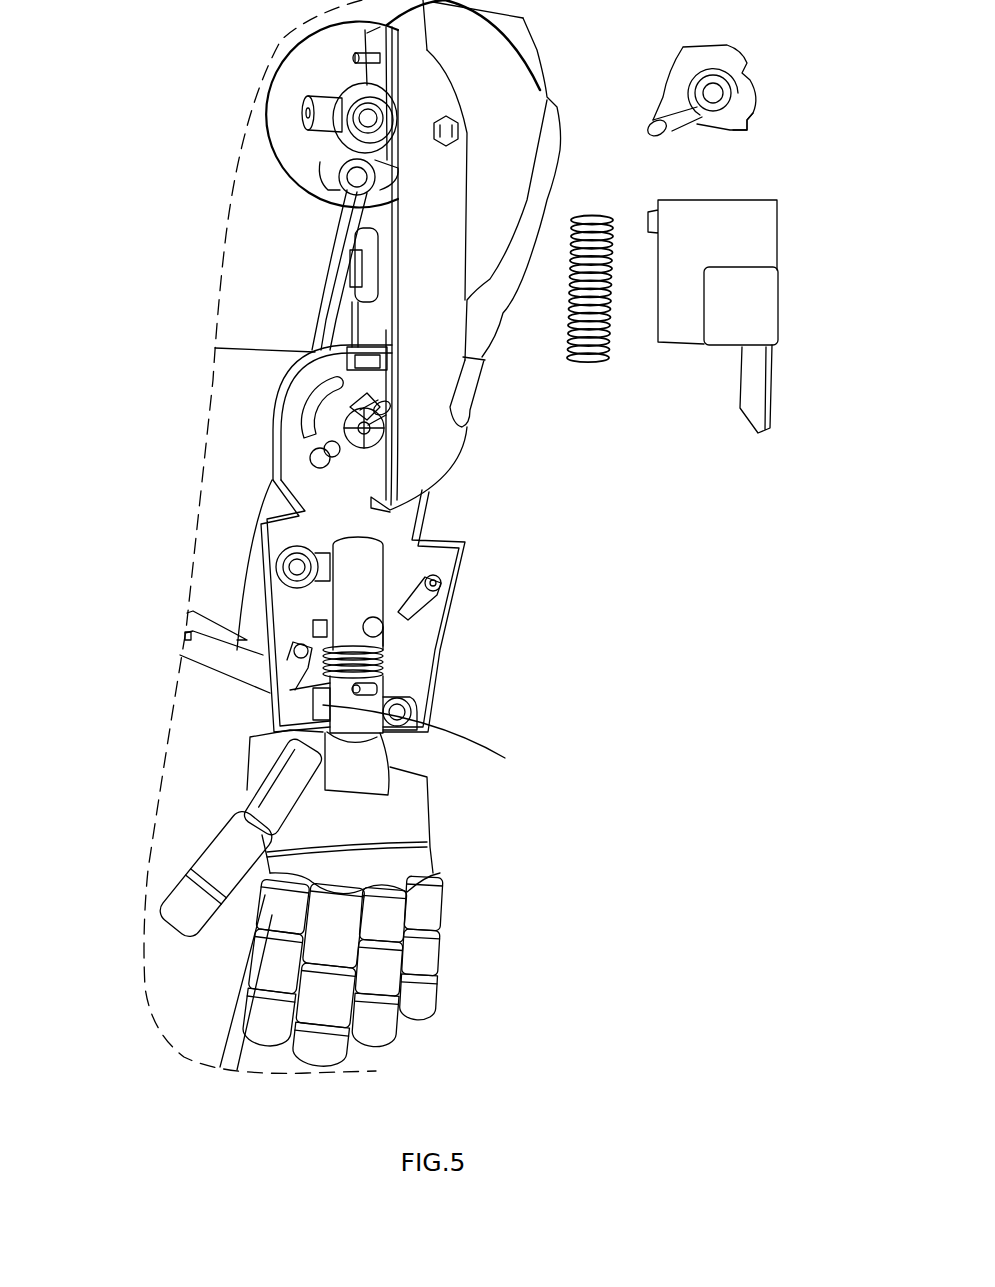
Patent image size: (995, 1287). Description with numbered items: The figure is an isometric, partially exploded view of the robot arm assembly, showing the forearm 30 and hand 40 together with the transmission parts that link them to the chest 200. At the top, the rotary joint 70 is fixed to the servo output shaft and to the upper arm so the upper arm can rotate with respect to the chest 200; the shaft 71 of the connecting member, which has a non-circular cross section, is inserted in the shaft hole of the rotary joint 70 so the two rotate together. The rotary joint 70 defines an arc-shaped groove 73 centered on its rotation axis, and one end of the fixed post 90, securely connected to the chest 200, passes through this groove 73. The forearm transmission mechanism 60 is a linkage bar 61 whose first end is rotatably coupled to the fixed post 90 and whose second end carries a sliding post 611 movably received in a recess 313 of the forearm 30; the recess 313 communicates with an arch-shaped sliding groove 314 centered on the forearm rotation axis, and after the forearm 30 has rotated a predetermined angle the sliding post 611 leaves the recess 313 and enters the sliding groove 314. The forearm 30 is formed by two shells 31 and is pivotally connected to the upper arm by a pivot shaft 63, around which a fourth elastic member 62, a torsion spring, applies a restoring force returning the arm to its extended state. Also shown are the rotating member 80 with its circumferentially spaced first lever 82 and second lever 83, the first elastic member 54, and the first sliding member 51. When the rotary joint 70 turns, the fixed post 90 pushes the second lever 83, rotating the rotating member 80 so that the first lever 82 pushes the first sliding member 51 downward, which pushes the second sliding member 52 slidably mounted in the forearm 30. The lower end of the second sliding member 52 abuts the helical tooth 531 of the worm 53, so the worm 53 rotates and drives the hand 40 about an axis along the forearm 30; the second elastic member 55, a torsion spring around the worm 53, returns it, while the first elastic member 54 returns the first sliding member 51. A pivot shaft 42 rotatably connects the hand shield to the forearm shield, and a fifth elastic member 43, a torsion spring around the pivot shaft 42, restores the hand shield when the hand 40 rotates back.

The chest 200 is at (246, 151).
The rotary joint 70 is at (318, 72).
The shaft 71 is at (327, 113).
The groove 73 is at (397, 160).
The fixed post 90 is at (327, 180).
The forearm transmission mechanism 60 is at (333, 247).
The linkage bar 61 is at (337, 273).
The sliding groove 314 is at (318, 421).
The recess 313 is at (312, 427).
The sliding post 611 is at (325, 462).
The fourth elastic member 62 is at (384, 430).
The pivot shaft 63 is at (383, 450).
The shells 31 is at (425, 643).
The second sliding member 52 is at (393, 535).
The worm 53 is at (360, 560).
The helical tooth 531 is at (387, 600).
The second elastic member 55 is at (380, 663).
The forearm 30 is at (449, 701).
The pivot shaft 42 is at (433, 710).
The fifth elastic member 43 is at (323, 705).
The hand 40 is at (373, 818).
The first elastic member 54 is at (594, 332).
The first sliding member 51 is at (743, 231).
The rotating member 80 is at (733, 93).
The first lever 82 is at (680, 116).
The second lever 83 is at (745, 117).